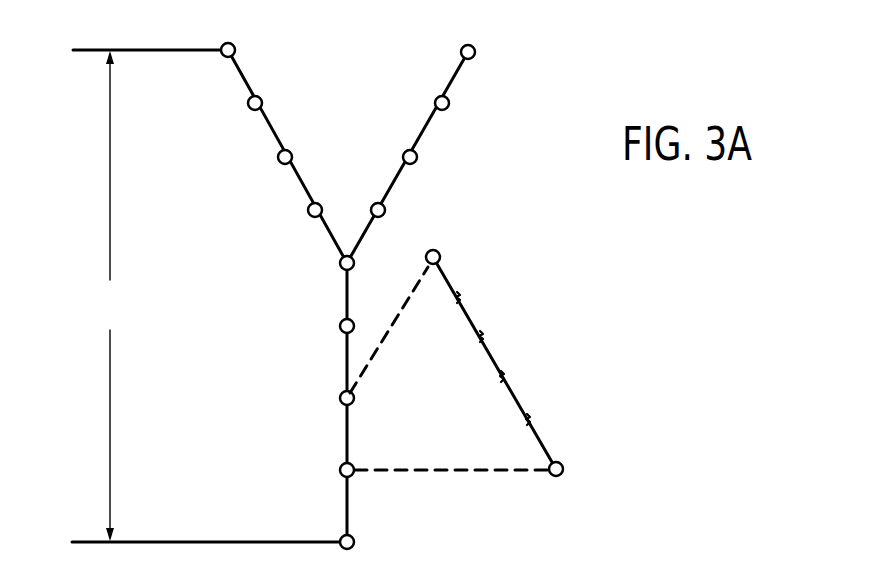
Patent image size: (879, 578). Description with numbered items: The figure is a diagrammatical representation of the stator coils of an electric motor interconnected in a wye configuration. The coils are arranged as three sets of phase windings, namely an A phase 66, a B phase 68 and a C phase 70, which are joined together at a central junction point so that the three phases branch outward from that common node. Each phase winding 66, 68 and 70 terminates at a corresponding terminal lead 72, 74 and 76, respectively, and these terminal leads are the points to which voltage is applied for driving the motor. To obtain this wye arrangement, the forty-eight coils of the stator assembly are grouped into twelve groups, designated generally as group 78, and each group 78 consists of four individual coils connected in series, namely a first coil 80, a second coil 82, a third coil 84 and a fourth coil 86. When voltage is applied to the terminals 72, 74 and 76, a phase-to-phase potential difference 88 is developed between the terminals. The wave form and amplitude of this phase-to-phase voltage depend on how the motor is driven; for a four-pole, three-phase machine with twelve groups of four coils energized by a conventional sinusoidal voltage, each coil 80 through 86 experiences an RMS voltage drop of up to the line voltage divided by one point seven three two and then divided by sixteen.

The A phase 66 is at (265, 134).
The B phase 68 is at (404, 188).
The C phase 70 is at (333, 434).
The terminal lead 72 is at (235, 46).
The terminal lead 74 is at (474, 46).
The terminal lead 76 is at (355, 541).
The group of coils 78 is at (342, 363).
The first coil 80 is at (463, 297).
The second coil 82 is at (485, 337).
The third coil 84 is at (505, 377).
The fourth coil 86 is at (532, 420).
The phase-to-phase potential difference 88 is at (112, 296).